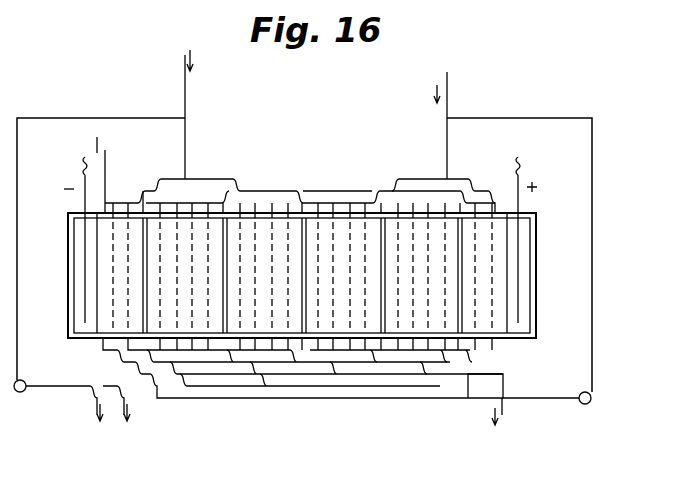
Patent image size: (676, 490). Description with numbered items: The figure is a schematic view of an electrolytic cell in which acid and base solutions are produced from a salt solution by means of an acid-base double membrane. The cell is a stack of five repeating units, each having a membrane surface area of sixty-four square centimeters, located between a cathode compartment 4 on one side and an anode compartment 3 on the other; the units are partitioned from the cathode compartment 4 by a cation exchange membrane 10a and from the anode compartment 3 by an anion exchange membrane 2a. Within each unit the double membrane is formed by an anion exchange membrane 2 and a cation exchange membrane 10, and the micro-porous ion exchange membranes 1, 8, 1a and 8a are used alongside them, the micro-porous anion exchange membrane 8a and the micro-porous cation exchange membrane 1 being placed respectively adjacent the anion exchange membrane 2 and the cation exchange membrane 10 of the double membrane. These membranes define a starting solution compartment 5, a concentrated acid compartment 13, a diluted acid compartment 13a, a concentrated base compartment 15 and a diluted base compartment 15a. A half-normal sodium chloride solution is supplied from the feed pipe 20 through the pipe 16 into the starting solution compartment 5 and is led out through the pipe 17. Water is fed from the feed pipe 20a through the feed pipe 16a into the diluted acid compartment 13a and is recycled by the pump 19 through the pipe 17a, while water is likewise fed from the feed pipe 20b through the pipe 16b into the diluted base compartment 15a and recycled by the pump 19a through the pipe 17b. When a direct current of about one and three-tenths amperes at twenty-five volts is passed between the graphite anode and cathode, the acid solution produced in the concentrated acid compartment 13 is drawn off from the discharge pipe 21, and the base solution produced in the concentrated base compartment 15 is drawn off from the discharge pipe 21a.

The microporous cation exchange membrane 1 is at (370, 320).
The micro-porous ion exchange membrane 1a is at (337, 320).
The anion exchange membrane 2 is at (307, 320).
The anion exchange membrane 2a is at (510, 243).
The anode compartment 3 is at (530, 275).
The cathode compartment 4 is at (80, 238).
The starting solution compartment 5 is at (343, 228).
The micro-porous ion exchange membrane 8 is at (358, 320).
The micro-porous anion exchange membrane 8a is at (320, 320).
The cation exchange membrane 10 is at (300, 228).
The cation exchange membrane 10a is at (97, 262).
The concentrated acid compartment 13 is at (357, 228).
The diluted acid compartment 13a is at (375, 228).
The concentrated base compartment 15 is at (323, 228).
The diluted base compartment 15a is at (310, 228).
The pipe 16 is at (110, 200).
The feed pipe 16a is at (185, 128).
The pipe 16b is at (447, 150).
The pipe 17 is at (90, 402).
The pipe 17a is at (178, 398).
The pipe 17b is at (418, 398).
The pump 19 is at (22, 392).
The pump 19a is at (590, 402).
The feed pipe 20 is at (105, 152).
The feed pipe 20a is at (185, 82).
The feed pipe 20b is at (447, 84).
The discharge pipe 21 is at (120, 406).
The discharge pipe 21a is at (503, 410).